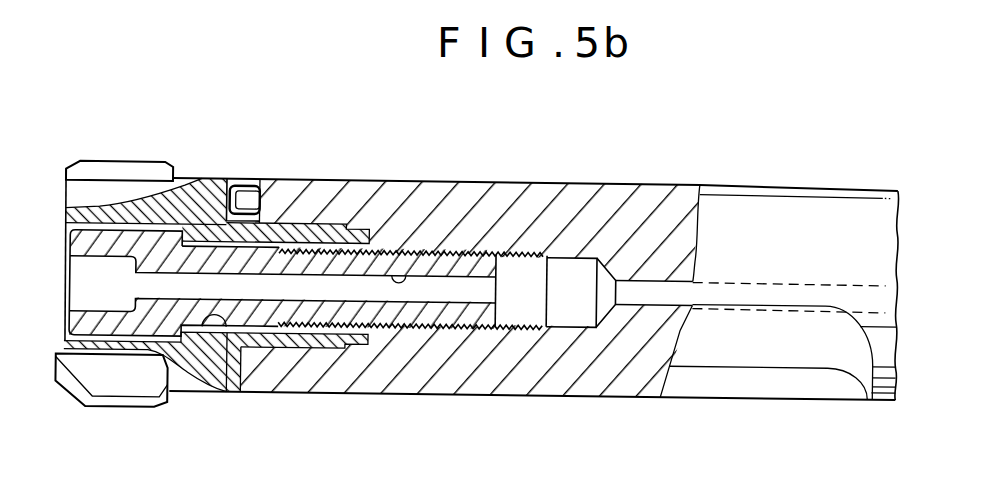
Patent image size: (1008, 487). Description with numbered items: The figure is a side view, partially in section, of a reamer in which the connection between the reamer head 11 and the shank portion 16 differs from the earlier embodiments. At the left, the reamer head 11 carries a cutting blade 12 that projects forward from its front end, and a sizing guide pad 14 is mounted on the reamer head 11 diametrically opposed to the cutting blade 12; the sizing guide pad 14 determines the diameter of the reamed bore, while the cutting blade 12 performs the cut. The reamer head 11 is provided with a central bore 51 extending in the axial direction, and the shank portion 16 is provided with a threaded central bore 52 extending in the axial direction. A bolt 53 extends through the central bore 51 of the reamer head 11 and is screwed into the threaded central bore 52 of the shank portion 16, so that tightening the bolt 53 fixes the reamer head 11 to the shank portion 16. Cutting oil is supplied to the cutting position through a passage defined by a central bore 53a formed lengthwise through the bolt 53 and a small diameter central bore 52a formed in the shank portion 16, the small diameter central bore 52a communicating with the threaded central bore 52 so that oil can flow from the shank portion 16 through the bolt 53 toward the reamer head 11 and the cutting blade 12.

The reamer head 11 is at (202, 179).
The cutting blade 12 is at (130, 383).
The sizing guide pad 14 is at (143, 162).
The shank portion 16 is at (506, 194).
The central bore 51 is at (232, 333).
The threaded central bore 52 is at (440, 310).
The small diameter central bore 52a is at (633, 291).
The bolt 53 is at (98, 240).
The central bore 53a is at (411, 277).